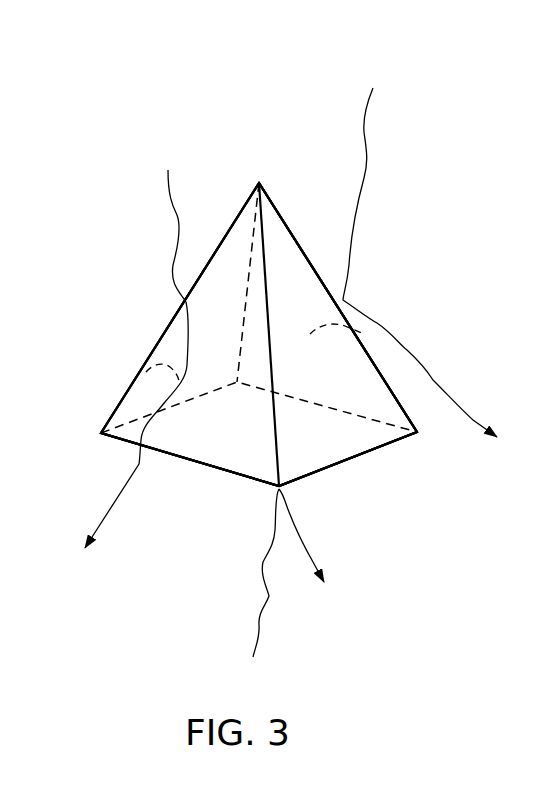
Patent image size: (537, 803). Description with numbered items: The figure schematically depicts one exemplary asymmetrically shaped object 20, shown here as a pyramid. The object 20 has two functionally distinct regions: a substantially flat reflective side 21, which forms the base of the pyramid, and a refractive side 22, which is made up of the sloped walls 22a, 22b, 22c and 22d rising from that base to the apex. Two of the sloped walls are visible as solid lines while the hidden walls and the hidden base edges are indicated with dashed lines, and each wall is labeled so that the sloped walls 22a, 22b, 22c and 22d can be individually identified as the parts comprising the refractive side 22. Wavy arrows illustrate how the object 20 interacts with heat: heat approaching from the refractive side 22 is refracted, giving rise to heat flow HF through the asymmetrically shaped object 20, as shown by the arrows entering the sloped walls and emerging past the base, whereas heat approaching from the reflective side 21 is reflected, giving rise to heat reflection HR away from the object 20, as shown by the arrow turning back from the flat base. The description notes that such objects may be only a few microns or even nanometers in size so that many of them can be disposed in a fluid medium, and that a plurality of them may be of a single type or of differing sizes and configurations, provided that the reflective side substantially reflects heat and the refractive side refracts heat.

The asymmetrically shaped object 20 is at (272, 145).
The reflective side 21 is at (230, 478).
The refractive side 22 is at (150, 332).
The sloped wall 22a is at (357, 436).
The sloped wall 22b is at (354, 331).
The sloped wall 22c is at (145, 371).
The sloped wall 22d is at (227, 445).
The heat flow HF is at (177, 235).
The heat reflection HR is at (270, 597).